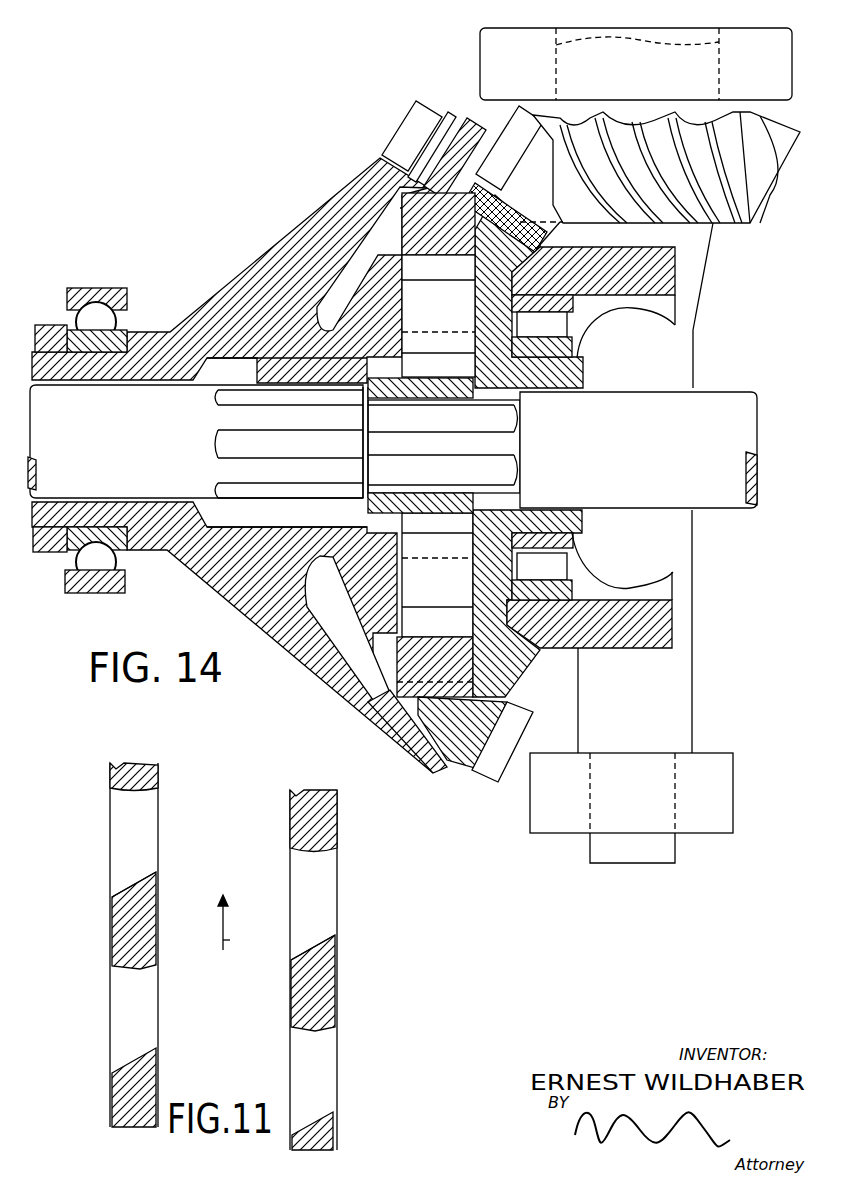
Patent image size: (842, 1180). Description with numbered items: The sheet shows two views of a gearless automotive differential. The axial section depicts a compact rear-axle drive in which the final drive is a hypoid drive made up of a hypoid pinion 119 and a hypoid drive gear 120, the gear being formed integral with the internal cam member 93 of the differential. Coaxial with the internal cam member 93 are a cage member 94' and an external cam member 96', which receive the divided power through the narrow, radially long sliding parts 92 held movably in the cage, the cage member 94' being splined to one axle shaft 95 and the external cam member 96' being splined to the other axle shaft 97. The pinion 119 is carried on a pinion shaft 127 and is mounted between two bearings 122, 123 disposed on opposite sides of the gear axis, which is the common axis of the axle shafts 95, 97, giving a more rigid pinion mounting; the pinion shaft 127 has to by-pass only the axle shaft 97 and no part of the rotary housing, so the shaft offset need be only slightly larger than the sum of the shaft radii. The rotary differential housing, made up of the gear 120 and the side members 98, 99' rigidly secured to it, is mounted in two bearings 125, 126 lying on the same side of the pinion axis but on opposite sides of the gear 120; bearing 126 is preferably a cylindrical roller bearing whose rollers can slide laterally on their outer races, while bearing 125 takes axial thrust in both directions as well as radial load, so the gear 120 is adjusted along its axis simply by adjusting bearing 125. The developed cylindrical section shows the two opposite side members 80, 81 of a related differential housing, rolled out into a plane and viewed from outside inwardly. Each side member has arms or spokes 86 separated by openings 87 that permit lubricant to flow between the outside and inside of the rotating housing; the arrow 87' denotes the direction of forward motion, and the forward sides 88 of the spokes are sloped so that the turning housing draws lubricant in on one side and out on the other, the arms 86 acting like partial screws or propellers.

In FIG. 14, the bearing 122 is at (741, 50).
In FIG. 14, the hypoid pinion 119 is at (763, 190).
In FIG. 14, the axle shaft 95 is at (195, 441).
In FIG. 14, the external cam member 96' is at (454, 445).
In FIG. 14, the axle shaft 97 is at (638, 450).
In FIG. 14, the sliding part 92 is at (438, 446).
In FIG. 14, the internal cam member 93 is at (407, 657).
In FIG. 14, the cage member 94' is at (376, 480).
In FIG. 14, the side member 98 is at (267, 614).
In FIG. 14, the side member 99' is at (527, 607).
In FIG. 14, the bearing 126 is at (575, 595).
In FIG. 14, the pinion shaft 127 is at (635, 631).
In FIG. 14, the bearing 123 is at (720, 820).
In FIG. 14, the hypoid drive gear 120 is at (463, 752).
In FIG. 14, the bearing 125 is at (113, 597).
In FIG. 11, the side member 80 is at (122, 1038).
In FIG. 11, the side member 81 is at (327, 1067).
In FIG. 11, the arm 86 is at (122, 938).
In FIG. 11, the opening 87 is at (224, 828).
In FIG. 11, the arrow 87' is at (242, 924).
In FIG. 11, the forward side 88 is at (132, 890).